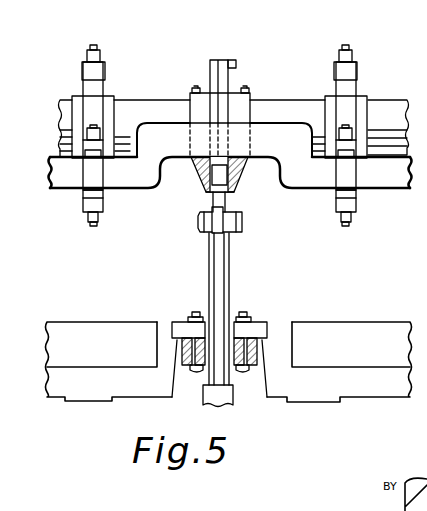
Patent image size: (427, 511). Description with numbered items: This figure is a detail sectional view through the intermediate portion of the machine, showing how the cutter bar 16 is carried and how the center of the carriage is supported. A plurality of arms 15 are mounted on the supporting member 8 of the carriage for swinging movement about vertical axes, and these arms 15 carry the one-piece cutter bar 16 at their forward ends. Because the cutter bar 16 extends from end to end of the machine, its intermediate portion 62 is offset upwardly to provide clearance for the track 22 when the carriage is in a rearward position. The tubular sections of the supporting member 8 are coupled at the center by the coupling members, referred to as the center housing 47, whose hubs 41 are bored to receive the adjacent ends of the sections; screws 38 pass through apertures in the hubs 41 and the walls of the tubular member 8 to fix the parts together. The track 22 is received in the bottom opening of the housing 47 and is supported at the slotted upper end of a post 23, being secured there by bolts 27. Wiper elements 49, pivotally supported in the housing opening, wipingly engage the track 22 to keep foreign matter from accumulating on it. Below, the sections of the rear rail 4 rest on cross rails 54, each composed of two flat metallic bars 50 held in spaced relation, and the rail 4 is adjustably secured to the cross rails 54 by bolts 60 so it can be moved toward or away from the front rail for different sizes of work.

The rear rail 4 is at (102, 321).
The supporting member 8 is at (128, 104).
The arms 15 is at (85, 82).
The cutter bar 16 is at (143, 184).
The track 22 is at (227, 201).
The post 23 is at (228, 291).
The bolts 27 is at (243, 222).
The screws 38 is at (193, 88).
The hubs 41 is at (192, 96).
The center housing 47 is at (208, 62).
The wiper elements 49 is at (212, 193).
The flat metallic bars 50 is at (200, 366).
The cross rails 54 is at (178, 350).
The bolts 60 is at (196, 312).
The intermediate portion 62 is at (286, 130).